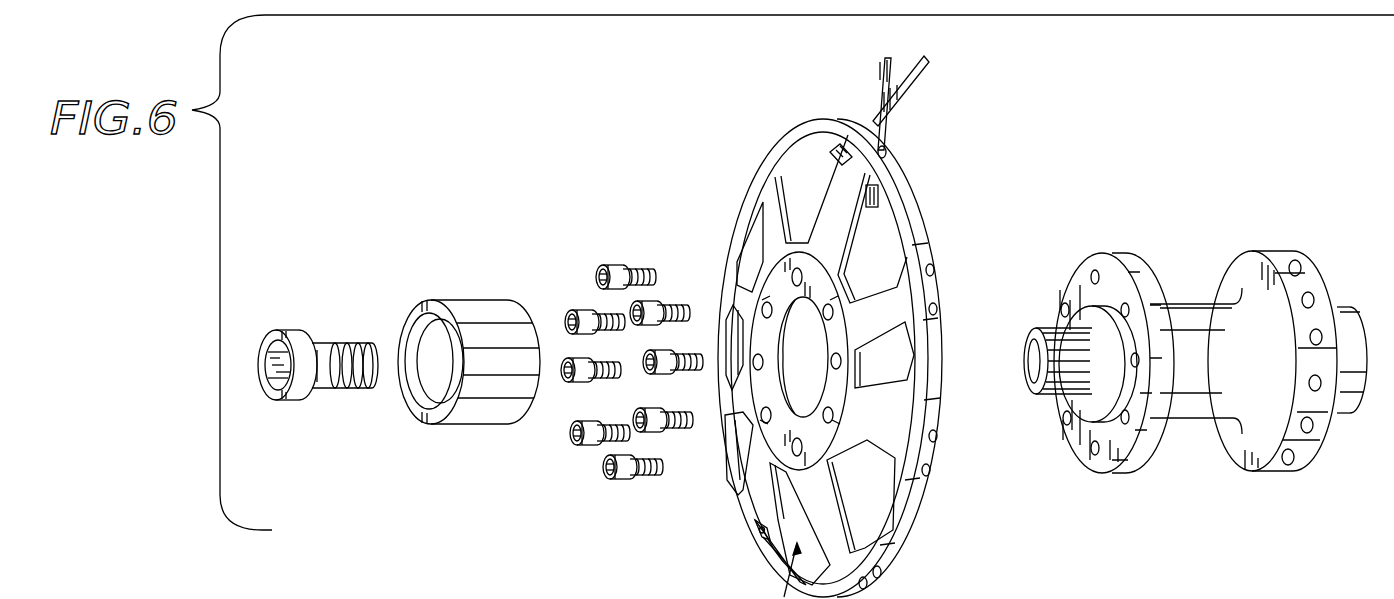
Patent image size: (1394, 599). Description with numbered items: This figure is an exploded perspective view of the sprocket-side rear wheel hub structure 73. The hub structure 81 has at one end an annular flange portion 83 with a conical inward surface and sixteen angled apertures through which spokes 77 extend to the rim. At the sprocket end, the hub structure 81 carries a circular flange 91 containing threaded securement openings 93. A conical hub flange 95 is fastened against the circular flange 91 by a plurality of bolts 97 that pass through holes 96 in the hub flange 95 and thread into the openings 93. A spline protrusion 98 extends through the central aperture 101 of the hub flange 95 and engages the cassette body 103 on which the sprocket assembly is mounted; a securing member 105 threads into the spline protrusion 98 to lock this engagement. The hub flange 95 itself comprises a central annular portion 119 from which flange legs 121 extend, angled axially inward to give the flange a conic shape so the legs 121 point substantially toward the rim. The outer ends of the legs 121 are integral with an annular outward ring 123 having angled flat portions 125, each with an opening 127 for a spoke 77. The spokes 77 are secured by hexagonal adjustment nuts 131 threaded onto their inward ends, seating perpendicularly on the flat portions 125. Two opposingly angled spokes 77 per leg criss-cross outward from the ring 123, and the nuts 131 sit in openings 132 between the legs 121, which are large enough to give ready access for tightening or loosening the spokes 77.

The hub structure 73 is at (1084, 135).
The spokes 77 is at (884, 95).
The hub structure 81 is at (1195, 310).
The annular flange portion 83 is at (1300, 262).
The circular flange 91 is at (1060, 274).
The threaded securement openings 93 is at (1100, 272).
The hub flange 95 is at (762, 196).
The bolt holes 96 is at (790, 268).
The bolts 97 is at (630, 266).
The spline protrusion 98 is at (1075, 400).
The central aperture 101 is at (812, 344).
The cassette body 103 is at (486, 330).
The securing member 105 is at (336, 340).
The central annular portion 119 is at (835, 392).
The flange legs 121 is at (880, 205).
The annular outward ring 123 is at (784, 150).
The angled flat portions 125 is at (773, 186).
The openings 127 is at (888, 152).
The hexagonal adjustment nuts 131 is at (838, 148).
The openings 132 is at (798, 172).